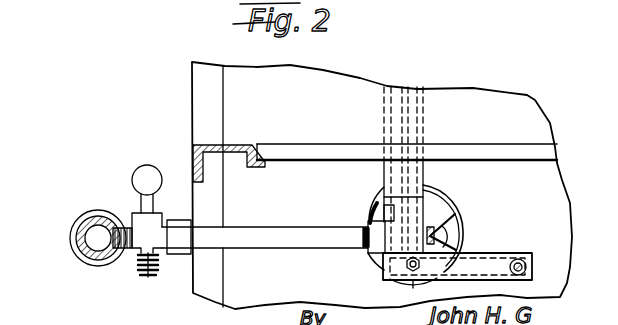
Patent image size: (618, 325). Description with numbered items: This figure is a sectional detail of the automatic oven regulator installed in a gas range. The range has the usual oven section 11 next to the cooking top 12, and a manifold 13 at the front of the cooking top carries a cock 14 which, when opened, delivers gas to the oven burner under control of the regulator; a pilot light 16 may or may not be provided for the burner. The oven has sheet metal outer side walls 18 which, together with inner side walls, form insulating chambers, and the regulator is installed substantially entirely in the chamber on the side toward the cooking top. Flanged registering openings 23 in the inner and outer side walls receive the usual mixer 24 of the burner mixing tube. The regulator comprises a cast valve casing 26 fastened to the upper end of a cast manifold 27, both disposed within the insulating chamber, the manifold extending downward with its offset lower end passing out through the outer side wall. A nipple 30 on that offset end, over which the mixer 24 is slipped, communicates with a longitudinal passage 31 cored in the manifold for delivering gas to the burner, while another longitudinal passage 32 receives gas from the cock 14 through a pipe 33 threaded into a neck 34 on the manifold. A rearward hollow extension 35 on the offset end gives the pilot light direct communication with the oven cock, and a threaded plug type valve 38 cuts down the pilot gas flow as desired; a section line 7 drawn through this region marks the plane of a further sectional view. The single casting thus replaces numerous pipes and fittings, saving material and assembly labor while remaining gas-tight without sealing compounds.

The section line 7- 7 is at (337, 265).
The oven section 11 is at (508, 96).
The cooking top 12 is at (284, 143).
The manifold 13 is at (82, 253).
The cock 14 is at (145, 245).
The pilot light 16 is at (533, 267).
The side walls 18 is at (274, 82).
The flanged registering openings 23 is at (423, 223).
The mixer 24 is at (417, 203).
The valve casing 26 is at (387, 202).
The cast manifold 27 is at (425, 133).
The nipple 30 is at (452, 230).
The longitudinal passage 31 is at (430, 179).
The longitudinal passage 32 is at (386, 112).
The pipe 33 is at (243, 234).
The neck 34 is at (381, 244).
The rearward hollow extension 35 is at (487, 255).
The threaded plug type valve 38 is at (413, 282).